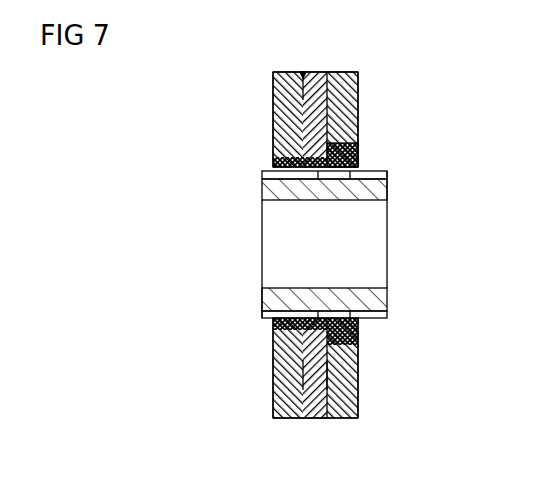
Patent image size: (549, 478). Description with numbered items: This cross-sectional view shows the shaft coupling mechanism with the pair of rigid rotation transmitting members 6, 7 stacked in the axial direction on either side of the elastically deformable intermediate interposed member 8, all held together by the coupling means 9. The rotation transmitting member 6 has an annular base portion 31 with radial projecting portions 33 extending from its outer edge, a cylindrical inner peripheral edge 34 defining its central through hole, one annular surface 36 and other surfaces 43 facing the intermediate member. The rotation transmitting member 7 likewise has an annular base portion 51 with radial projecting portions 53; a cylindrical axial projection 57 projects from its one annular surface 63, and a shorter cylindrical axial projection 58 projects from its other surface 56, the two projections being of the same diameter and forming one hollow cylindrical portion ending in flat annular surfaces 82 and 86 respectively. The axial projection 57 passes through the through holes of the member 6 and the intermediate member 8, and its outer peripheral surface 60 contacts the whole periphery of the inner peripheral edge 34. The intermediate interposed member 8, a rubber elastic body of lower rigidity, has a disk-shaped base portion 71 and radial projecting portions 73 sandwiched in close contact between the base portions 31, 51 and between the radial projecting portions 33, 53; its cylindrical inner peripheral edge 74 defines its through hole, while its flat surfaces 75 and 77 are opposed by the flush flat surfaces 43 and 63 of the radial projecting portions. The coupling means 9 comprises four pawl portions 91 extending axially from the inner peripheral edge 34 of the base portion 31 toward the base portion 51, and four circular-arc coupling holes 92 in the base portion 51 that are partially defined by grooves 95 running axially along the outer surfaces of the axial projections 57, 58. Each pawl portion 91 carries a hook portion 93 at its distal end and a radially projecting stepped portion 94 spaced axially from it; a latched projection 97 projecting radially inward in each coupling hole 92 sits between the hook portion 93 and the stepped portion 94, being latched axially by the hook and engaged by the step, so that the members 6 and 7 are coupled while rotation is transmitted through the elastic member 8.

The rotation transmitting member 6 is at (272, 71).
The rotation transmitting member 7 is at (359, 72).
The intermediate interposed member 8 is at (305, 71).
The coupling means 9 is at (387, 312).
The annular base portion 31 is at (280, 157).
The radial projecting portions 33 is at (280, 90).
The cylindrical inner peripheral edge 34 is at (262, 174).
The annular surface 36 is at (273, 360).
The surfaces 43 is at (295, 372).
The annular base portion 51 is at (342, 150).
The radial projecting portions 53 is at (359, 88).
The surface 56 is at (360, 364).
The cylindrical axial projection 57 is at (264, 297).
The cylindrical axial projection 58 is at (388, 183).
The outer peripheral surface 60 is at (273, 330).
The annular surface 63 is at (350, 372).
The disk-shaped base portion 71 is at (335, 143).
The radial projecting portions 73 is at (324, 84).
The cylindrical inner peripheral edge 74 is at (358, 156).
The flat surface 75 is at (280, 402).
The flat surface 77 is at (355, 398).
The flat annular surface 82 is at (262, 291).
The flat annular surface 86 is at (388, 190).
The pawl portions 91 is at (323, 176).
The coupling holes 92 is at (350, 176).
The hook portion 93 is at (350, 325).
The stepped portion 94 is at (333, 328).
The grooves 95 is at (282, 182).
The latched projection 97 is at (358, 338).